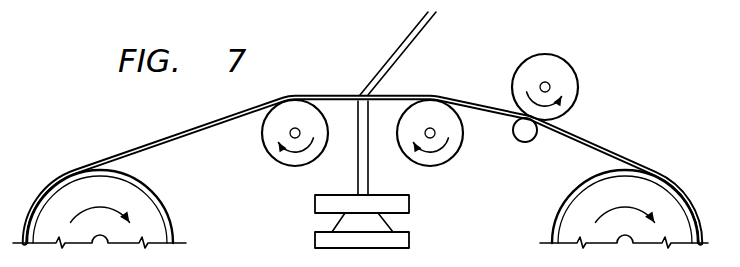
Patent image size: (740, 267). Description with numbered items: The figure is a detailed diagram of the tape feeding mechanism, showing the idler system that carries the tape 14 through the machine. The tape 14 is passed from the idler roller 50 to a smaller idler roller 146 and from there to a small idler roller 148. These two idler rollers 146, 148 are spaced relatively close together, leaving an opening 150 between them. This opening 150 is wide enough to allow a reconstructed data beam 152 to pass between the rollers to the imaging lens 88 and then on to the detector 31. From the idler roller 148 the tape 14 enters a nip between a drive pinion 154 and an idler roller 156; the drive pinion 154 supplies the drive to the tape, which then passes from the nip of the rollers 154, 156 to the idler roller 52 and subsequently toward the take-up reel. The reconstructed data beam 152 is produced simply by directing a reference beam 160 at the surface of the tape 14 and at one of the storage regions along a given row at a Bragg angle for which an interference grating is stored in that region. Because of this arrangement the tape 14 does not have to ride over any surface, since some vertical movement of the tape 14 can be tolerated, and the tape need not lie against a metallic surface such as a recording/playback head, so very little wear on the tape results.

The tape 14 is at (143, 147).
The idler roller 50 is at (72, 180).
The idler roller 52 is at (661, 178).
The idler roller 146 is at (262, 141).
The idler roller 148 is at (452, 167).
The opening 150 is at (378, 154).
The reconstructed data beam 152 is at (357, 168).
The imaging lens 88 is at (410, 204).
The detector 31 is at (410, 241).
The idler roller 156 is at (565, 57).
The drive pinion 154 is at (536, 139).
The reference beam 160 is at (398, 46).